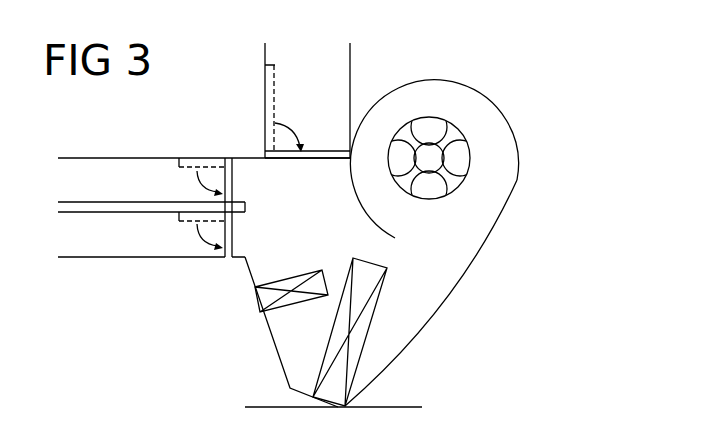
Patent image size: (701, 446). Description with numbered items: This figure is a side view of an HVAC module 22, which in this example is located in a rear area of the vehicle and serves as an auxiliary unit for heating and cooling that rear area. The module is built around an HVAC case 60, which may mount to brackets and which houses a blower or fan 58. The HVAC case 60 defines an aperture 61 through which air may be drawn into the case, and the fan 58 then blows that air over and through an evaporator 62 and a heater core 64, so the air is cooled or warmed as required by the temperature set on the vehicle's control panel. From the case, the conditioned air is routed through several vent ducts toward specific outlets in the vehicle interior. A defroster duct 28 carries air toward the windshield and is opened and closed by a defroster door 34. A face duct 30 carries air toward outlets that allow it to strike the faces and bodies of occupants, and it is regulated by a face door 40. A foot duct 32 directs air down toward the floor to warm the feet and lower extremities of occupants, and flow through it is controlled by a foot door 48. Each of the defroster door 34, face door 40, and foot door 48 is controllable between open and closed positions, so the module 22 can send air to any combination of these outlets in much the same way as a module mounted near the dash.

The HVAC module 22 is at (522, 88).
The defroster duct 28 is at (265, 51).
The face duct 30 is at (127, 158).
The foot duct 32 is at (140, 258).
The defroster door 34 is at (327, 154).
The face door 40 is at (228, 182).
The foot door 48 is at (228, 230).
The fan 58 is at (427, 133).
The HVAC case 60 is at (510, 129).
The aperture 61 is at (458, 188).
The evaporator 62 is at (367, 333).
The heater core 64 is at (288, 307).